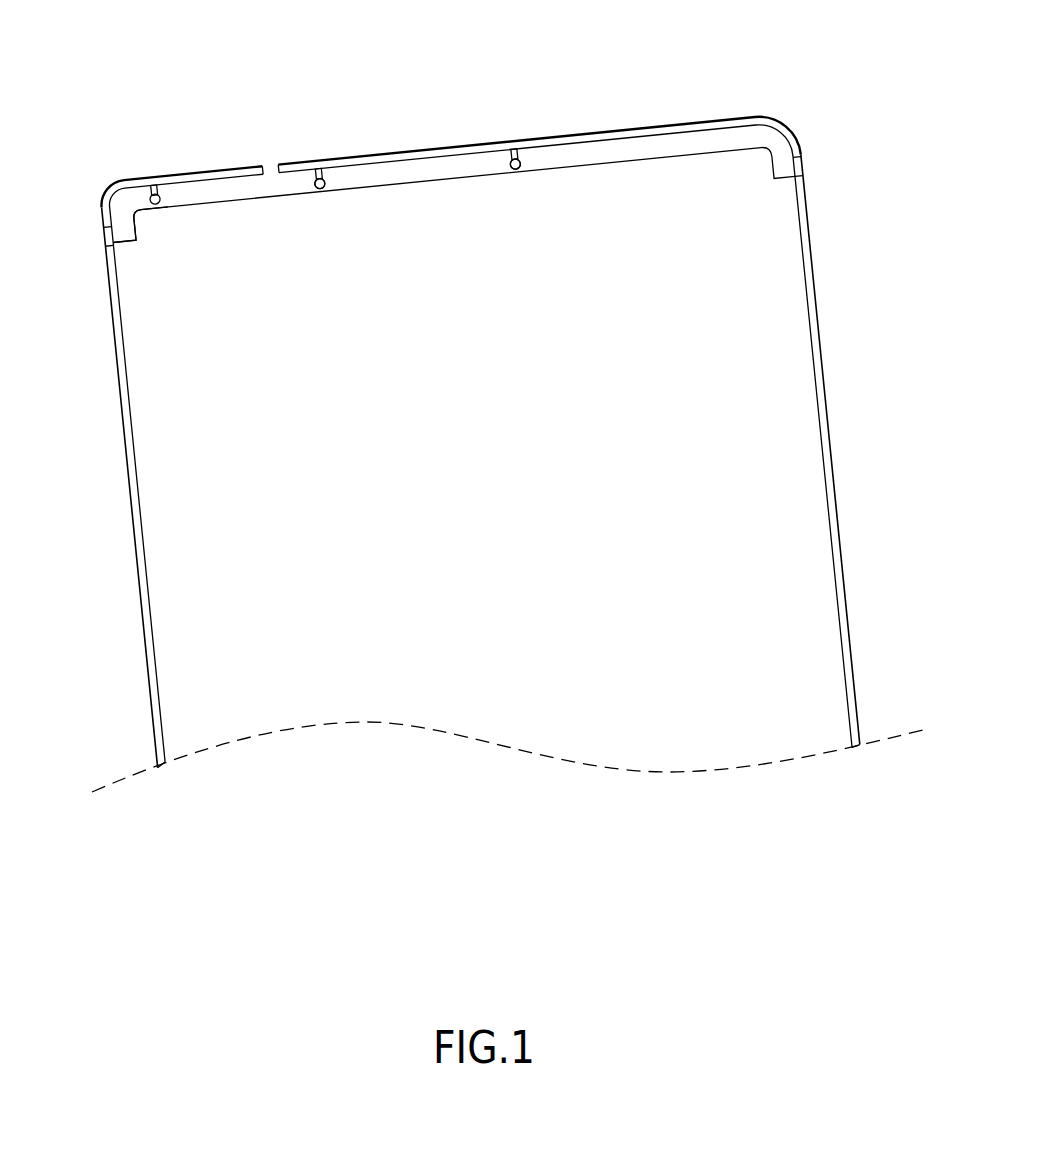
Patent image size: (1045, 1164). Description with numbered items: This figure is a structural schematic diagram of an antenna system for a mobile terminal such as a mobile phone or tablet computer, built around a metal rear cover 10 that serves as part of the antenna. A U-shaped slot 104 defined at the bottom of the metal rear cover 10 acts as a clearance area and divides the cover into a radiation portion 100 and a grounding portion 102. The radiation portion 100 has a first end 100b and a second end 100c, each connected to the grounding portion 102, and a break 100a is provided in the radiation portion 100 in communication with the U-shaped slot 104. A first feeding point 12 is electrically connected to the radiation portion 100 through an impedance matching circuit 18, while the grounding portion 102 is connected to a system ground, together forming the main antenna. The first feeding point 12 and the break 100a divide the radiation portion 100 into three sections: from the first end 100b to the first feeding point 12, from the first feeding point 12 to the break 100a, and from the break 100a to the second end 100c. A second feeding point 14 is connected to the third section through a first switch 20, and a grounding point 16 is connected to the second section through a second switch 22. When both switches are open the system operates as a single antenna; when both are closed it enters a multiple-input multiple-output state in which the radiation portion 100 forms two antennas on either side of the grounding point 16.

The metal rear cover 10 is at (826, 234).
The radiation portion 100 is at (215, 170).
The break 100a is at (269, 158).
The first end 100b is at (798, 170).
The second end 100c is at (108, 238).
The grounding portion 102 is at (775, 333).
The U-shaped slot 104 is at (690, 143).
The first feeding point 12 is at (512, 162).
The second feeding point 14 is at (148, 199).
The grounding point 16 is at (330, 187).
The impedance matching circuit 18 is at (518, 158).
The first switch 20 is at (150, 180).
The second switch 22 is at (320, 168).